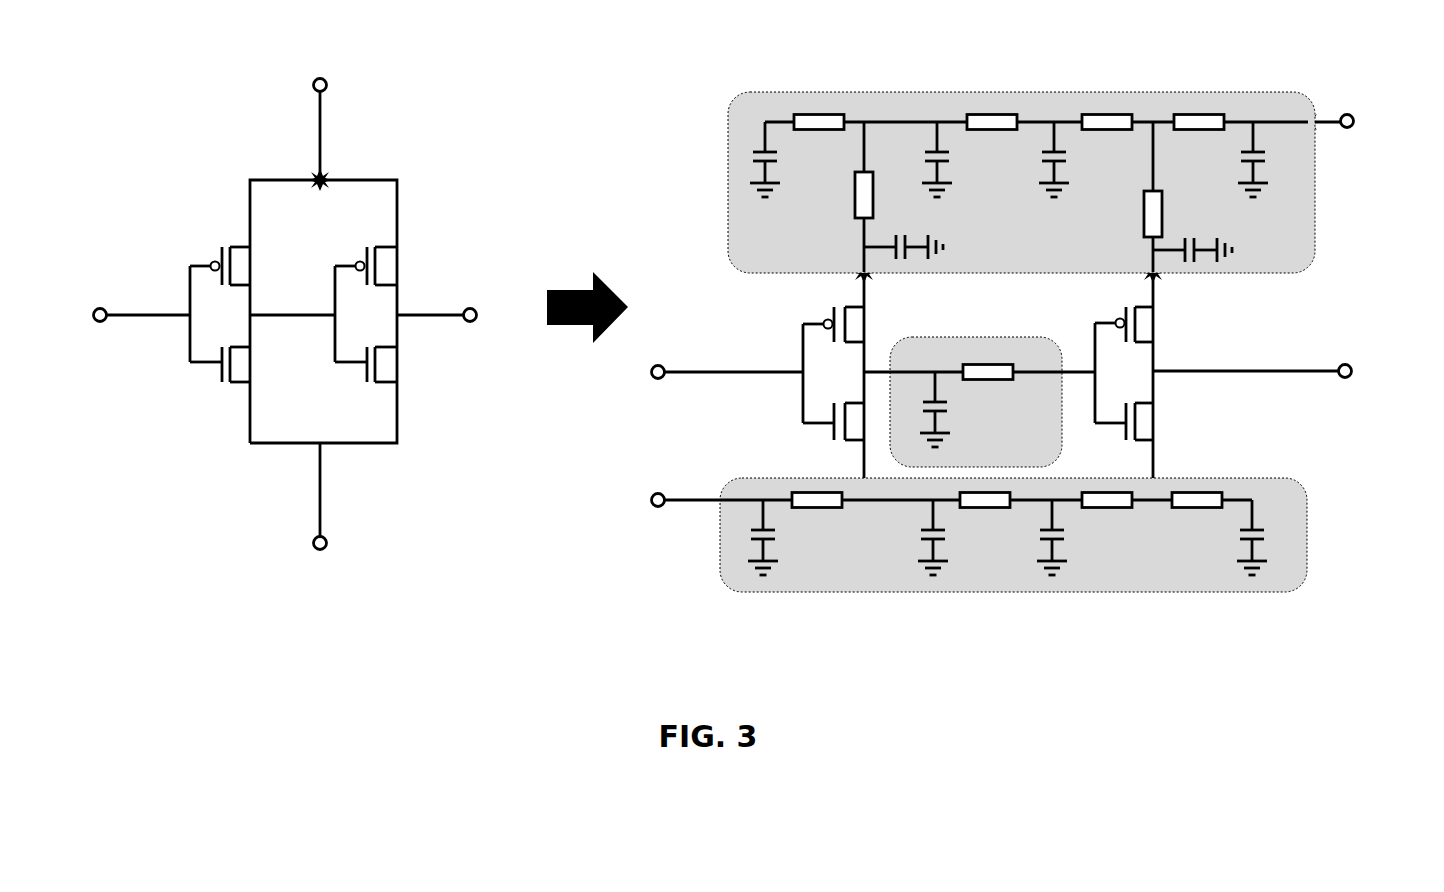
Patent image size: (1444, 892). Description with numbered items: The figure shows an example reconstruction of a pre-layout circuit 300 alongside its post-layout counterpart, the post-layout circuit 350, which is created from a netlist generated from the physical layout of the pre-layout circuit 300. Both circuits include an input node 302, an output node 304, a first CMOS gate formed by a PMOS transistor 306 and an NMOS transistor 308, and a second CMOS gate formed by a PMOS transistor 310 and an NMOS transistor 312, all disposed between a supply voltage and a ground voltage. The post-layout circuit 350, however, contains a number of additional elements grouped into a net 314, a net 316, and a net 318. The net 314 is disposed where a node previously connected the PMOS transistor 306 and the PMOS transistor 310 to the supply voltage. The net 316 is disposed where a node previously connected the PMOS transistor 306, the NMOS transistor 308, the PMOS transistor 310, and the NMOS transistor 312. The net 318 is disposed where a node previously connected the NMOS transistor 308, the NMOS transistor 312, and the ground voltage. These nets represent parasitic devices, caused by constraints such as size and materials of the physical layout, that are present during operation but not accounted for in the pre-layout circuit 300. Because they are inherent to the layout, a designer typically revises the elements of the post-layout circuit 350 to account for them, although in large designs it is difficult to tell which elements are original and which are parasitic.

The pre-layout circuit 300 is at (242, 139).
The input node 302 is at (425, 343).
The output node 304 is at (899, 343).
The PMOS transistor 306 is at (213, 253).
The NMOS transistor 308 is at (213, 380).
The PMOS transistor 310 is at (357, 253).
The NMOS transistor 312 is at (357, 380).
The net 314 is at (728, 156).
The net 316 is at (993, 337).
The net 318 is at (1308, 538).
The post-layout circuit 350 is at (934, 69).